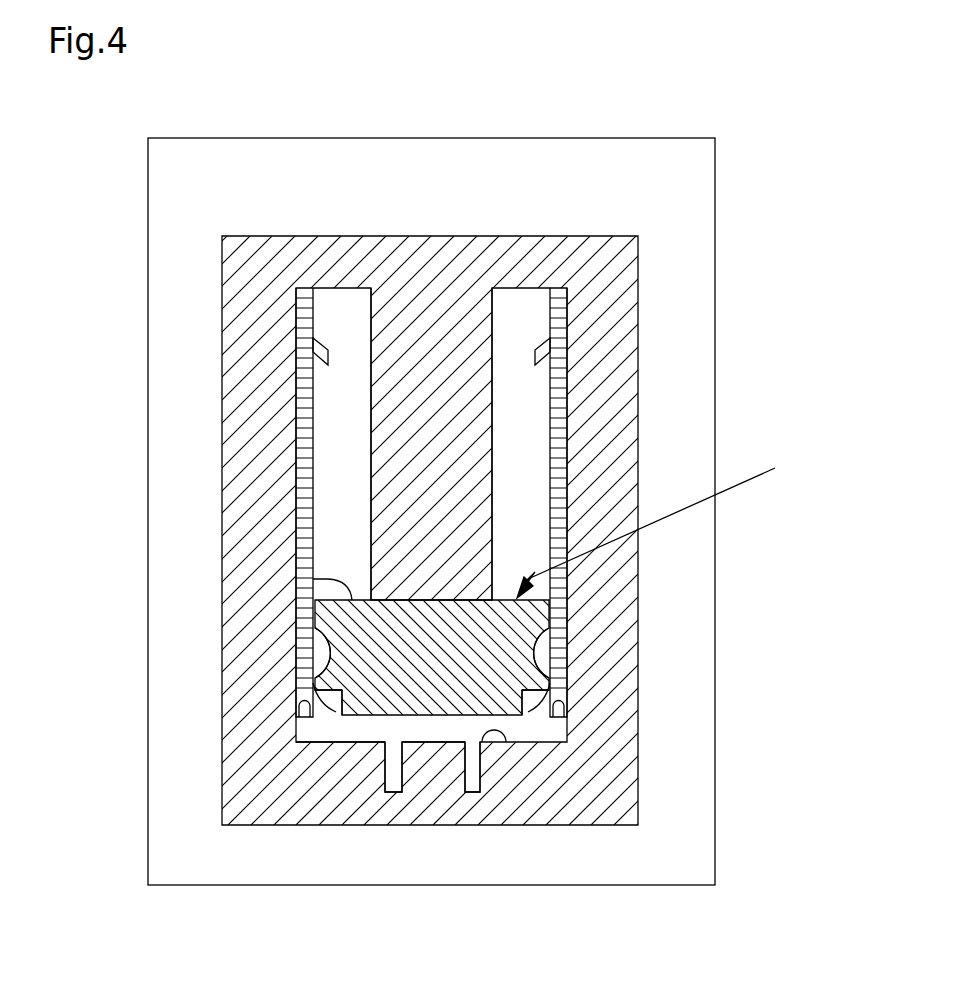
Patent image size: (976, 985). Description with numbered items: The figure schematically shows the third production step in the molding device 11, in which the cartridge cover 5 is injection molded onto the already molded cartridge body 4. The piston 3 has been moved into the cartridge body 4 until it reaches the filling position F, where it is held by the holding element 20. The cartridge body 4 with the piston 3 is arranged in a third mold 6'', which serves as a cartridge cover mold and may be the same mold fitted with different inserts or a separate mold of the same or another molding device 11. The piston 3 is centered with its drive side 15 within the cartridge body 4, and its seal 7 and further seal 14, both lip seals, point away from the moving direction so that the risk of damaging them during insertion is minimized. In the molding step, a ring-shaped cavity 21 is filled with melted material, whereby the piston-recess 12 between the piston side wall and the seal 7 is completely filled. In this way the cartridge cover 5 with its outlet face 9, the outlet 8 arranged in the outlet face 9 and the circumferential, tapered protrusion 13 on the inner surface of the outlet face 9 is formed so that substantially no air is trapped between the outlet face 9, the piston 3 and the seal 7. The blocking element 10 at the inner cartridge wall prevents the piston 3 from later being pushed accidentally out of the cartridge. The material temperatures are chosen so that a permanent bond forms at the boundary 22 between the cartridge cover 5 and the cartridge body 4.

The piston 3 is at (367, 690).
The cartridge body 4 is at (568, 423).
The cartridge cover 5 is at (344, 742).
The third mold 6'' is at (488, 530).
The seal 7 is at (546, 688).
The outlet 8 is at (405, 792).
The outlet face 9 is at (494, 742).
The blocking element 10 is at (322, 345).
The molding device 11 is at (687, 207).
The piston-recess 12 is at (524, 700).
The protrusion 13 is at (527, 695).
The further seal 14 is at (558, 678).
The drive side 15 is at (313, 579).
The holding element 20 is at (395, 480).
The ring-shaped cavity 21 is at (568, 735).
The boundary 22 is at (568, 710).
The filling position F is at (658, 523).